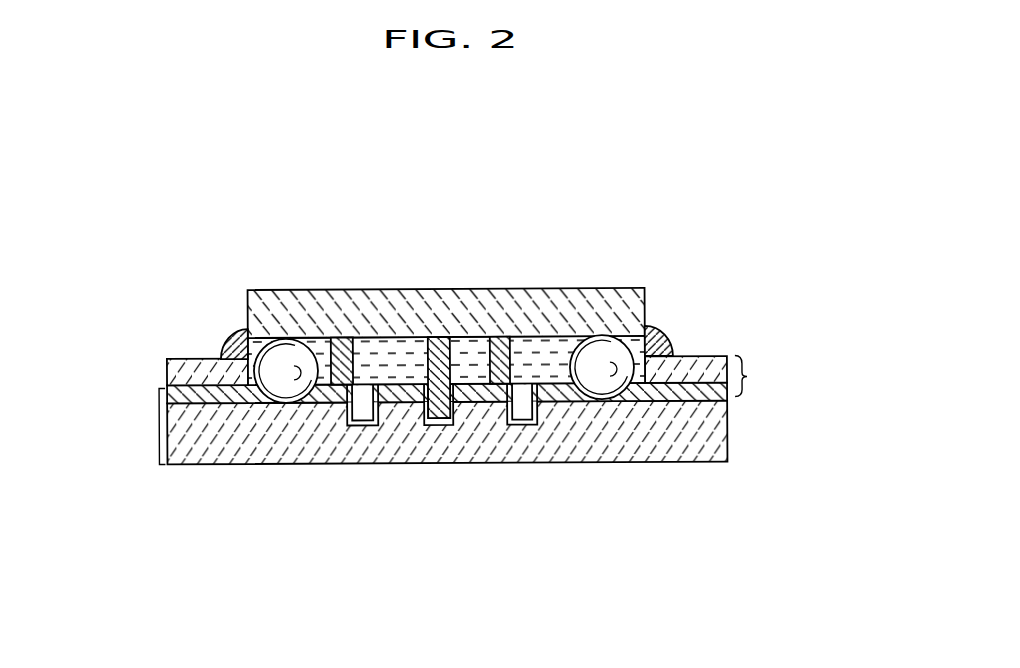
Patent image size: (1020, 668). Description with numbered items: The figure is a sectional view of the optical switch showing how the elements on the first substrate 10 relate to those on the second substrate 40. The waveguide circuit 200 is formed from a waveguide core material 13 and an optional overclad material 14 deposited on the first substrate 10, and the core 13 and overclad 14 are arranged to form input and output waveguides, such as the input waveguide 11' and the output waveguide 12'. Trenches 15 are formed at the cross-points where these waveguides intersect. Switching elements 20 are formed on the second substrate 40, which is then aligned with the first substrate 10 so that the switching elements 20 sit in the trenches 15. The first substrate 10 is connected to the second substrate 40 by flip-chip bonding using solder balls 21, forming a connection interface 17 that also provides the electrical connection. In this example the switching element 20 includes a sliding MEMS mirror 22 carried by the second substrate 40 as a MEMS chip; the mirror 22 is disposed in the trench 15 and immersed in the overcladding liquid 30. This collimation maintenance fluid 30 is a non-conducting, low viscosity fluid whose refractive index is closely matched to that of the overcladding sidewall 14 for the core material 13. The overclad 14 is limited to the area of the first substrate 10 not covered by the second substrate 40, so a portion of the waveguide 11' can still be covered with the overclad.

The first substrate 10 is at (200, 445).
The input waveguide 11' is at (809, 417).
The output waveguide 12' is at (528, 177).
The waveguide core material 13 is at (187, 393).
The overclad sidewall 14 is at (708, 356).
The trenches 15 is at (522, 426).
The connection interface 17 is at (772, 185).
The switching element 20 is at (468, 383).
The solder ball 21 is at (613, 352).
The sliding MEMS mirror 22 is at (435, 338).
The overcladding liquid 30 is at (562, 347).
The second substrate 40 is at (280, 300).
The waveguide circuit 200 is at (158, 427).